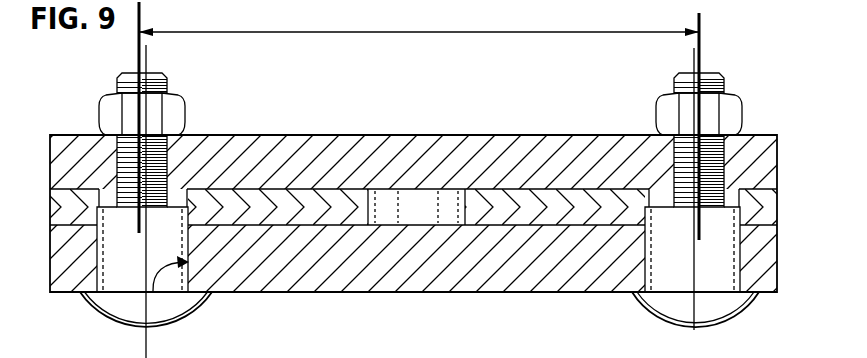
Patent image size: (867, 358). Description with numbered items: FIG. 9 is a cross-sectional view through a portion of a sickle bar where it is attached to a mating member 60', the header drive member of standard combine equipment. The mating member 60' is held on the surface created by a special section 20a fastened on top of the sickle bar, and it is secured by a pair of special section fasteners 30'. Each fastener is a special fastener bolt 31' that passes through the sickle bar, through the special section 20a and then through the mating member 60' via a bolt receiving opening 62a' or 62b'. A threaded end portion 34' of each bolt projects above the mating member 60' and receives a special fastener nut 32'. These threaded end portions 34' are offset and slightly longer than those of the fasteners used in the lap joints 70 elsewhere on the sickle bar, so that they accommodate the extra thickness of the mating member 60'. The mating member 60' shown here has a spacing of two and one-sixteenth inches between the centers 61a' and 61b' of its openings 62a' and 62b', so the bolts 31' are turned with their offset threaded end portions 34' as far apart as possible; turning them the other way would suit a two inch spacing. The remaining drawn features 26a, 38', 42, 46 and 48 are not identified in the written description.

The special section 20a is at (313, 202).
The aperture 26a is at (112, 176).
The special section fastener 30' is at (410, 322).
The special fastener bolt 31' is at (420, 325).
The special fastener nut 32' is at (401, 109).
The threaded end portion 34' is at (450, 89).
The counterbore 38' is at (418, 249).
The base plate 42 is at (423, 280).
The spacing distance 46 is at (419, 18).
The bearing surface 48 is at (196, 303).
The mating member 60' is at (413, 140).
The center of bolt receiving opening 61a' is at (172, 180).
The center of bolt receiving opening 61b' is at (721, 170).
The bolt receiving opening 62a' is at (179, 142).
The bolt receiving opening 62b' is at (662, 142).
The lap joint 70 is at (301, 4).